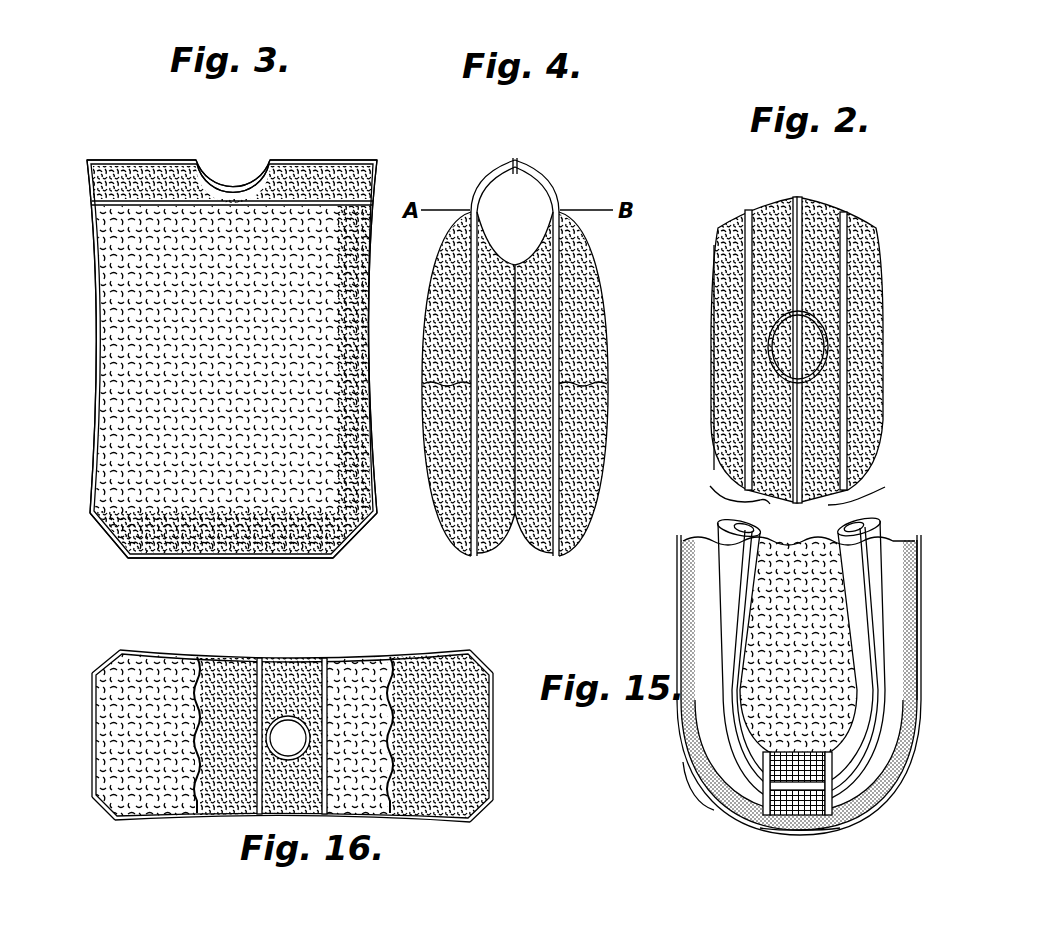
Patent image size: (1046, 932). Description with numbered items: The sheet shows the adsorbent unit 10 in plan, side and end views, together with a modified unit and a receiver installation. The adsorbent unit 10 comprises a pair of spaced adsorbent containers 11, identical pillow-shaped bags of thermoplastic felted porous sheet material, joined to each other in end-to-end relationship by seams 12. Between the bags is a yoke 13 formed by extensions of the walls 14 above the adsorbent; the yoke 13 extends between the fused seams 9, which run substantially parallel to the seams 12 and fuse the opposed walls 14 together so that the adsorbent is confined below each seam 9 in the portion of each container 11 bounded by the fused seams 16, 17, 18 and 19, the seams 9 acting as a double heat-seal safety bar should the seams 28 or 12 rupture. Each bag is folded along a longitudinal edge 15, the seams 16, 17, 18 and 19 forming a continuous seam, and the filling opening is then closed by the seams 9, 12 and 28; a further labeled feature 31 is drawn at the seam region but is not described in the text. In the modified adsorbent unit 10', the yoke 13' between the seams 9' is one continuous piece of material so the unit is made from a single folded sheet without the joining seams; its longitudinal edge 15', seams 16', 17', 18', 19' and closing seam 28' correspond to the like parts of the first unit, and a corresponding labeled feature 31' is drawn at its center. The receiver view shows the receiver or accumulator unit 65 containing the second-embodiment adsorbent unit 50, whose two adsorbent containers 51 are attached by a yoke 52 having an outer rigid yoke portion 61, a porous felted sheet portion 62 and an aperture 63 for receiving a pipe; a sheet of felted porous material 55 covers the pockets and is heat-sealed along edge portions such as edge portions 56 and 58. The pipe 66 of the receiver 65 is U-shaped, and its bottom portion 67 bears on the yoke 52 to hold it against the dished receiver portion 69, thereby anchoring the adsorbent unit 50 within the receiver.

In FIG. 3, the fused seams 9 is at (232, 149).
In FIG. 4, the fused seams 9 is at (520, 186).
In FIG. 2, the fused seams 9 is at (795, 318).
In FIG. 3, the adsorbent unit 10 is at (234, 312).
In FIG. 4, the adsorbent unit 10 is at (523, 325).
In FIG. 2, the adsorbent unit 10 is at (830, 309).
In FIG. 3, the adsorbent containers 11 is at (90, 370).
In FIG. 4, the adsorbent containers 11 is at (610, 438).
In FIG. 2, the adsorbent containers 11 is at (732, 212).
In FIG. 3, the seams 12 is at (128, 160).
In FIG. 4, the seams 12 is at (516, 160).
In FIG. 2, the seams 12 is at (802, 234).
In FIG. 3, the yoke 13 is at (232, 161).
In FIG. 4, the yoke 13 is at (494, 174).
In FIG. 2, the yoke 13 is at (711, 360).
In FIG. 3, the walls 14 is at (118, 330).
In FIG. 4, the walls 14 is at (518, 262).
In FIG. 3, the longitudinal edge 15 is at (75, 336).
In FIG. 3, the fused seam 16 is at (94, 552).
In FIG. 3, the fused seam 17 is at (230, 577).
In FIG. 4, the fused seam 17 is at (514, 560).
In FIG. 3, the fused seam 18 is at (355, 552).
In FIG. 4, the fused seam 18 is at (515, 395).
In FIG. 3, the fused seam 19 is at (390, 336).
In FIG. 4, the fused seam 19 is at (518, 387).
In FIG. 2, the fused seam 19 is at (795, 486).
In FIG. 3, the fused seam 28 is at (225, 154).
In FIG. 2, the fused seam 28 is at (850, 336).
In FIG. 3, the notch edge 31 is at (233, 149).
In FIG. 2, the notch edge 31 is at (853, 347).
In FIG. 16, the seams 9' is at (301, 716).
In FIG. 16, the adsorbent unit 10' is at (292, 702).
In FIG. 16, the yoke 13' is at (341, 709).
In FIG. 16, the longitudinal edge 15' is at (295, 638).
In FIG. 16, the fused seam 16' is at (297, 646).
In FIG. 16, the fused seam 17' is at (305, 735).
In FIG. 16, the fused seam 18' is at (306, 820).
In FIG. 16, the fused seam 19' is at (293, 837).
In FIG. 16, the fused seam 28' is at (288, 688).
In FIG. 16, the ring inner edge 31' is at (290, 738).
In FIG. 15, the adsorbent unit 50 is at (690, 540).
In FIG. 15, the adsorbent containers 51 is at (680, 612).
In FIG. 15, the yoke 52 is at (878, 812).
In FIG. 15, the felted thermoplastic porous material sheet 55 is at (802, 546).
In FIG. 15, the edge portion 56 is at (910, 574).
In FIG. 15, the edge portion 58 is at (684, 572).
In FIG. 15, the yoke portion 61 is at (852, 818).
In FIG. 15, the porous thermoplastic felted sheet material portion 62 is at (894, 794).
In FIG. 15, the aperture 63 is at (776, 822).
In FIG. 15, the receiver or accumulator unit 65 is at (672, 778).
In FIG. 15, the pipe 66 is at (710, 646).
In FIG. 15, the bottom portion 67 is at (740, 800).
In FIG. 15, the dished receiver portion 69 is at (700, 812).